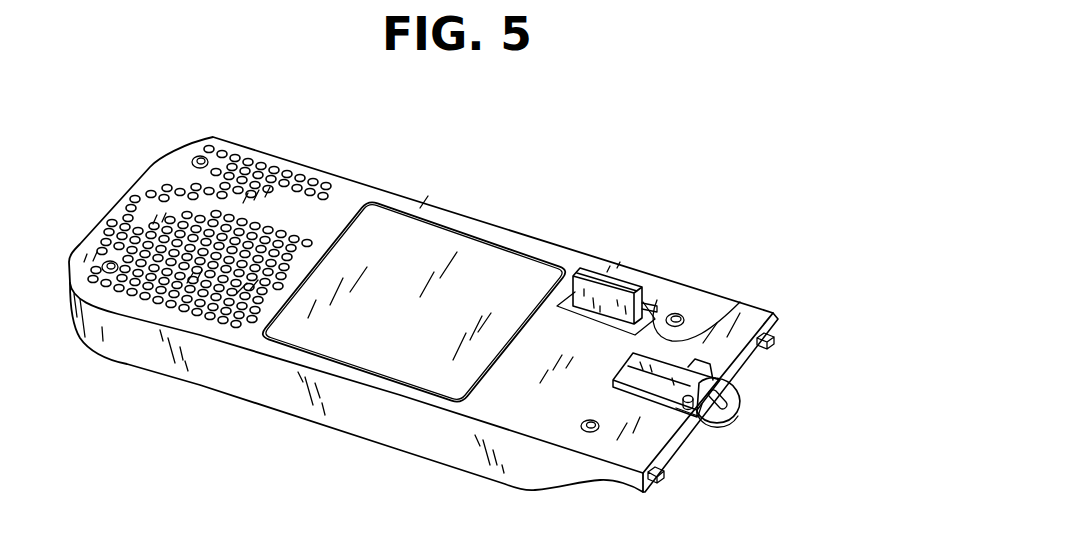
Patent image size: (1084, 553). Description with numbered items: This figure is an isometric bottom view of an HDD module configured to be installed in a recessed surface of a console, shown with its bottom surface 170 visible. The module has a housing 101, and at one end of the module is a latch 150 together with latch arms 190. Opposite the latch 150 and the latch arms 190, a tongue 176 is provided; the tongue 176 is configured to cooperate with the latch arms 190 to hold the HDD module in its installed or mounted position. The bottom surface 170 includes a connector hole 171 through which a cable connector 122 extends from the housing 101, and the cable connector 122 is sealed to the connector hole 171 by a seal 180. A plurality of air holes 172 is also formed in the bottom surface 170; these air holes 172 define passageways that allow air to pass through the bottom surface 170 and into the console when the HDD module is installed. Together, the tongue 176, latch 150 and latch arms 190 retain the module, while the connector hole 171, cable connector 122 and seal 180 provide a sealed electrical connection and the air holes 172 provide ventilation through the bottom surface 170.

The housing 101 is at (224, 392).
The cable connector 122 is at (601, 276).
The latch 150 is at (730, 414).
The bottom surface 170 is at (533, 428).
The connector hole 171 is at (727, 313).
The air holes 172 is at (287, 171).
The tongue 176 is at (118, 192).
The seal 180 is at (657, 300).
The latch arms 190 is at (665, 481).